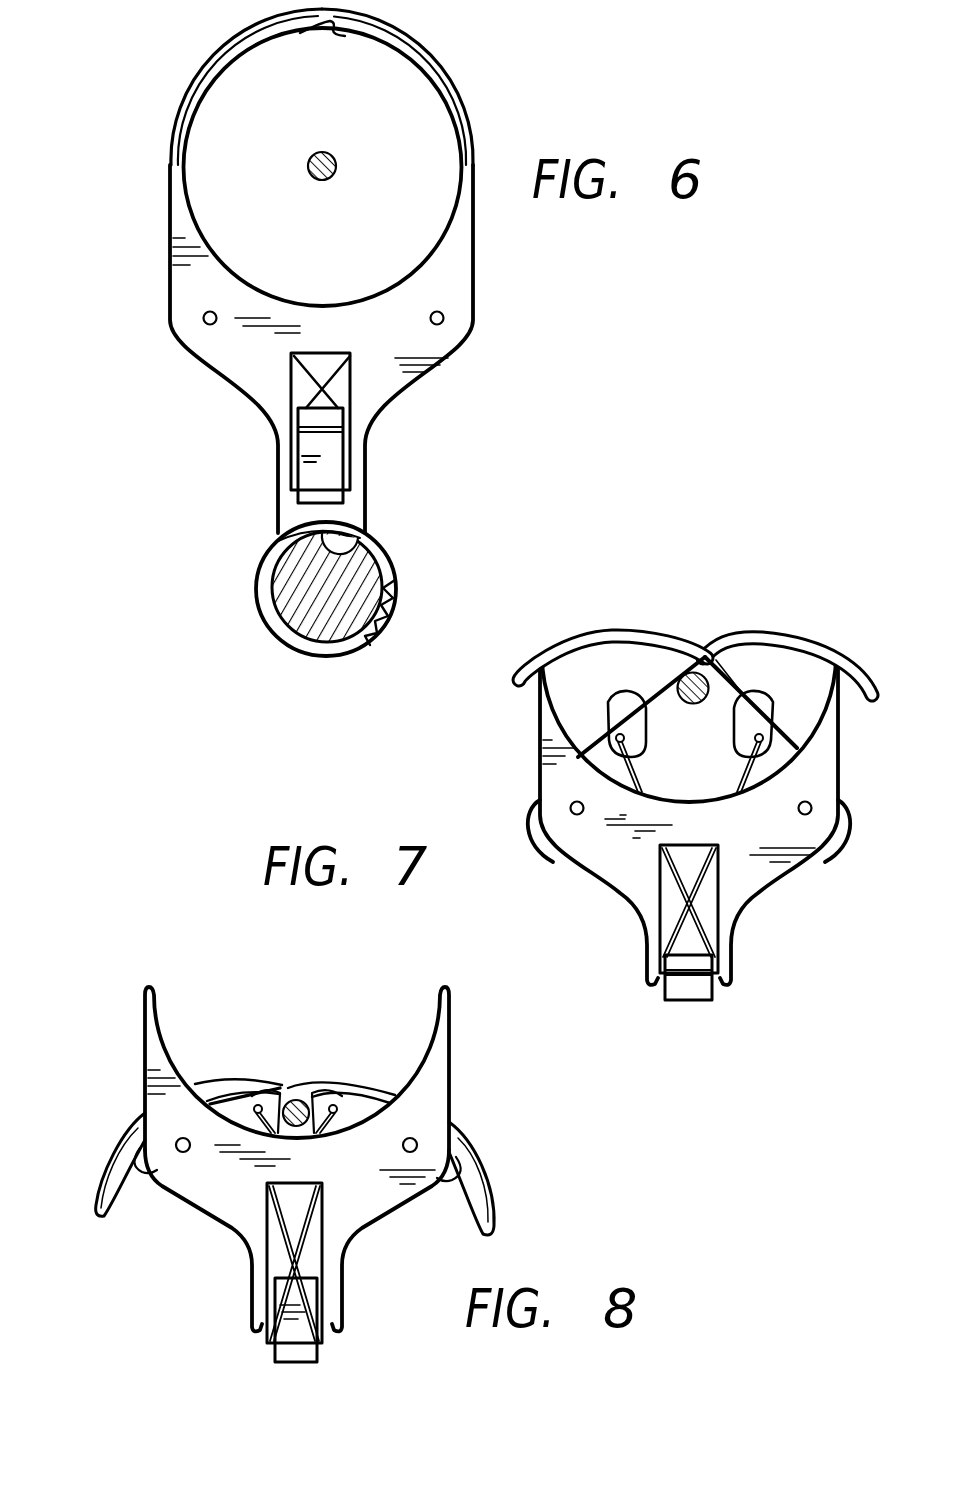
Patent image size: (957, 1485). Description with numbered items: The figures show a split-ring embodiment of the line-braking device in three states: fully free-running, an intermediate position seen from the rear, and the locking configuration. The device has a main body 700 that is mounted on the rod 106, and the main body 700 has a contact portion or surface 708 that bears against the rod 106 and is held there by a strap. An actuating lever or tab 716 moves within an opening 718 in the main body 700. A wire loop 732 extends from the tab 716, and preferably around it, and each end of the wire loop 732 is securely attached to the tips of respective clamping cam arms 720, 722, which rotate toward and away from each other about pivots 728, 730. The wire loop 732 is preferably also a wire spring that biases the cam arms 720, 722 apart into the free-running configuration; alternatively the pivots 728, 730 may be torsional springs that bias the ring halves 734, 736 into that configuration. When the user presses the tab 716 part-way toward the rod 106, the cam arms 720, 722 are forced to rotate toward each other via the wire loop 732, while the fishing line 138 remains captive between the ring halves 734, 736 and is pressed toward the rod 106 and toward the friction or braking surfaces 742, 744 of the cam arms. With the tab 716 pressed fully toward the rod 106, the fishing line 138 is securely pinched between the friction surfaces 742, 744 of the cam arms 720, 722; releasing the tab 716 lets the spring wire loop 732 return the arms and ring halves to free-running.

In FIG. 6, the rod 106 is at (313, 592).
In FIG. 6, the fishing line 138 is at (312, 153).
In FIG. 7, the fishing line 138 is at (699, 686).
In FIG. 8, the fishing line 138 is at (298, 1100).
In FIG. 6, the main body 700 is at (252, 371).
In FIG. 7, the main body 700 is at (603, 852).
In FIG. 8, the main body 700 is at (358, 1195).
In FIG. 6, the contact portion or surface 708 is at (360, 553).
In FIG. 6, the actuating lever or tab 716 is at (330, 483).
In FIG. 7, the actuating lever or tab 716 is at (693, 990).
In FIG. 8, the actuating lever or tab 716 is at (300, 1350).
In FIG. 6, the opening 718 is at (296, 476).
In FIG. 7, the clamping cam arm 720 is at (537, 843).
In FIG. 8, the clamping cam arm 720 is at (231, 1110).
In FIG. 7, the clamping cam arm 722 is at (840, 830).
In FIG. 8, the clamping cam arm 722 is at (350, 1113).
In FIG. 6, the pivot 728 is at (204, 324).
In FIG. 7, the pivot 728 is at (570, 808).
In FIG. 8, the pivot 728 is at (187, 1153).
In FIG. 6, the pivot 730 is at (443, 315).
In FIG. 7, the pivot 730 is at (812, 808).
In FIG. 7, the wire loop 732 is at (713, 937).
In FIG. 6, the ring half 734 is at (226, 50).
In FIG. 8, the ring half 734 is at (493, 1180).
In FIG. 6, the ring half 736 is at (467, 103).
In FIG. 8, the ring half 736 is at (107, 1157).
In FIG. 7, the friction or braking surface 742 is at (643, 690).
In FIG. 7, the friction or braking surface 744 is at (716, 661).